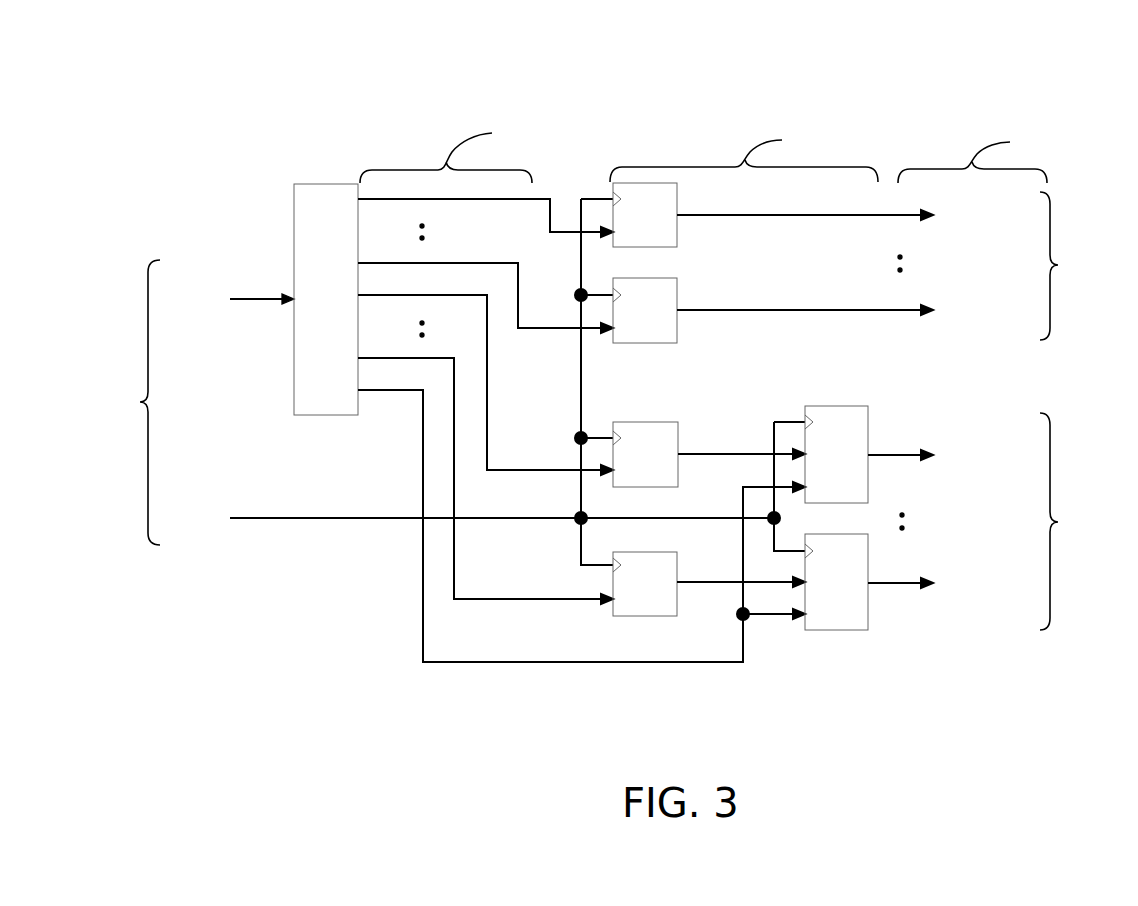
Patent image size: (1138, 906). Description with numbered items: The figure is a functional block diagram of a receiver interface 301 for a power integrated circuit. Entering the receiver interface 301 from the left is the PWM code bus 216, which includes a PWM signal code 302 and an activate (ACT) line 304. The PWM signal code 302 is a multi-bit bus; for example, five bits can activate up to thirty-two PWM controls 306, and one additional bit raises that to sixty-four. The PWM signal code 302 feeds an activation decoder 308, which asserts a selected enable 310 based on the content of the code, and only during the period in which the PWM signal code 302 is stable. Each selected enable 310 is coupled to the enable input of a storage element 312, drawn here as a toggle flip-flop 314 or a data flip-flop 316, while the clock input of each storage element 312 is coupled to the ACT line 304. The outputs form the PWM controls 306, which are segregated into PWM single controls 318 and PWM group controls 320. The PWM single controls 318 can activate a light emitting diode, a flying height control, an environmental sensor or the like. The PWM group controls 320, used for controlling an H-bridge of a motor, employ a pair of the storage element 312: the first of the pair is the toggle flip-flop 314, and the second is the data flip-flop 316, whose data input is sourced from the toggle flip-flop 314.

The receiver interface 301 is at (196, 57).
The PWM code bus 216 is at (140, 402).
The PWM signal code 302 is at (252, 298).
The activate (ACT) line 304 is at (295, 519).
The activation decoder 308 is at (338, 198).
The selected enable 310 is at (581, 391).
The storage element 312 is at (721, 391).
The toggle flip-flop 314 is at (660, 600).
The data flip-flop 316 is at (855, 616).
The PWM controls 306 is at (891, 234).
The PWM single controls 318 is at (1058, 265).
The PWM group controls 320 is at (1058, 522).